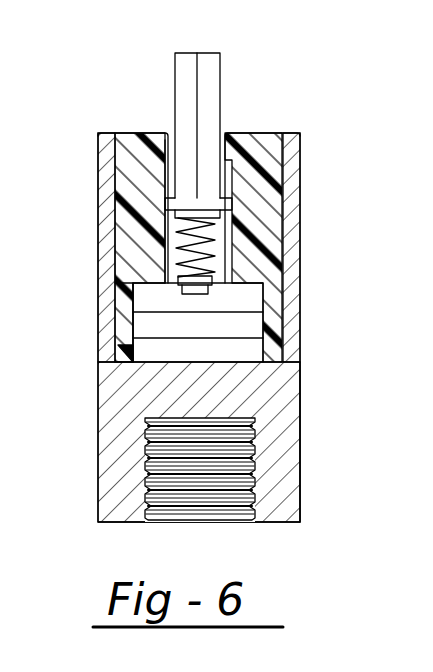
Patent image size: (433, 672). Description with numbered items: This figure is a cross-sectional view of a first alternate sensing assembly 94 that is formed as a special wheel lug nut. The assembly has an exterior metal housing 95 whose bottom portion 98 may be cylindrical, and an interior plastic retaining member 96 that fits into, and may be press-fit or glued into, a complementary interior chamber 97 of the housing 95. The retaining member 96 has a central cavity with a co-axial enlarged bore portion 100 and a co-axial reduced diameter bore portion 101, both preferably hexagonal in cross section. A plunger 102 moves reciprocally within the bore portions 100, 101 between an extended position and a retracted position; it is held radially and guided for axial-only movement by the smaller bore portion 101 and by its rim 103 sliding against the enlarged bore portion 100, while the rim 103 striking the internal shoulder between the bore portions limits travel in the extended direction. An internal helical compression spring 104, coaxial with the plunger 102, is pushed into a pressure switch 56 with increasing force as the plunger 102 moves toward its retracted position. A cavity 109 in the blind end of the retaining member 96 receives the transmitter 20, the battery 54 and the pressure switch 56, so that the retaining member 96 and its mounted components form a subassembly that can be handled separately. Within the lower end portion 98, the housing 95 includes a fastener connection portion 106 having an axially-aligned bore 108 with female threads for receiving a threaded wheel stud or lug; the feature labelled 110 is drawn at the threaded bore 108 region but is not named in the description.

The first alternate sensing assembly 94 is at (340, 176).
The exterior metal housing 95 is at (302, 408).
The interior plastic retaining member 96 is at (282, 131).
The interior chamber 97 is at (284, 243).
The bottom portion of housing 98 is at (300, 490).
The enlarged bore portion 100 is at (167, 174).
The reduced diameter bore portion 101 is at (221, 140).
The plunger 102 is at (221, 67).
The rim of plunger 103 is at (165, 187).
The internal helical compression spring 104 is at (118, 262).
The pressure switch 56 is at (193, 296).
The cavity 109 is at (142, 348).
The transmitter 20 is at (255, 318).
The battery 54 is at (255, 350).
The fastener connection portion 106 is at (236, 480).
The axially-aligned bore 108 is at (193, 418).
The thread bottom 110 is at (150, 495).